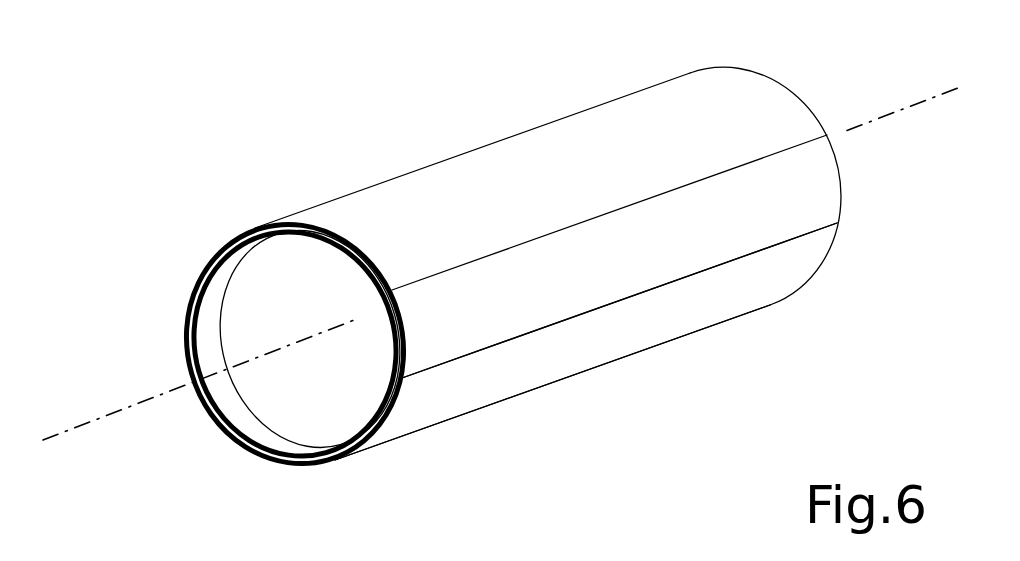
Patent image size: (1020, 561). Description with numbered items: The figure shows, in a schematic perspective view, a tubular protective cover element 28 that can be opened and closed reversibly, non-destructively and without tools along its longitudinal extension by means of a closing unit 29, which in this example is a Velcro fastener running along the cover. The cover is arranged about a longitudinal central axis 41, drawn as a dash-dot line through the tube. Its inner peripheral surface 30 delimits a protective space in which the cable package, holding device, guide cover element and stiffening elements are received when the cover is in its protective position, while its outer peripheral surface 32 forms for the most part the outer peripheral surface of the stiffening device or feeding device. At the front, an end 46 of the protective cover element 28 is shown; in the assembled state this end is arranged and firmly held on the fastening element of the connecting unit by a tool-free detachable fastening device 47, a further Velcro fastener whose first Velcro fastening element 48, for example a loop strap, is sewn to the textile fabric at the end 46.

The protective cover element 28 is at (365, 107).
The closing unit 29 is at (527, 307).
The inner peripheral surface 30 is at (300, 267).
The outer peripheral surface 32 is at (753, 291).
The longitudinal central axis 41 is at (858, 124).
The end 46 is at (250, 310).
The fastening device 47 is at (287, 331).
The first Velcro fastening element 48 is at (207, 330).